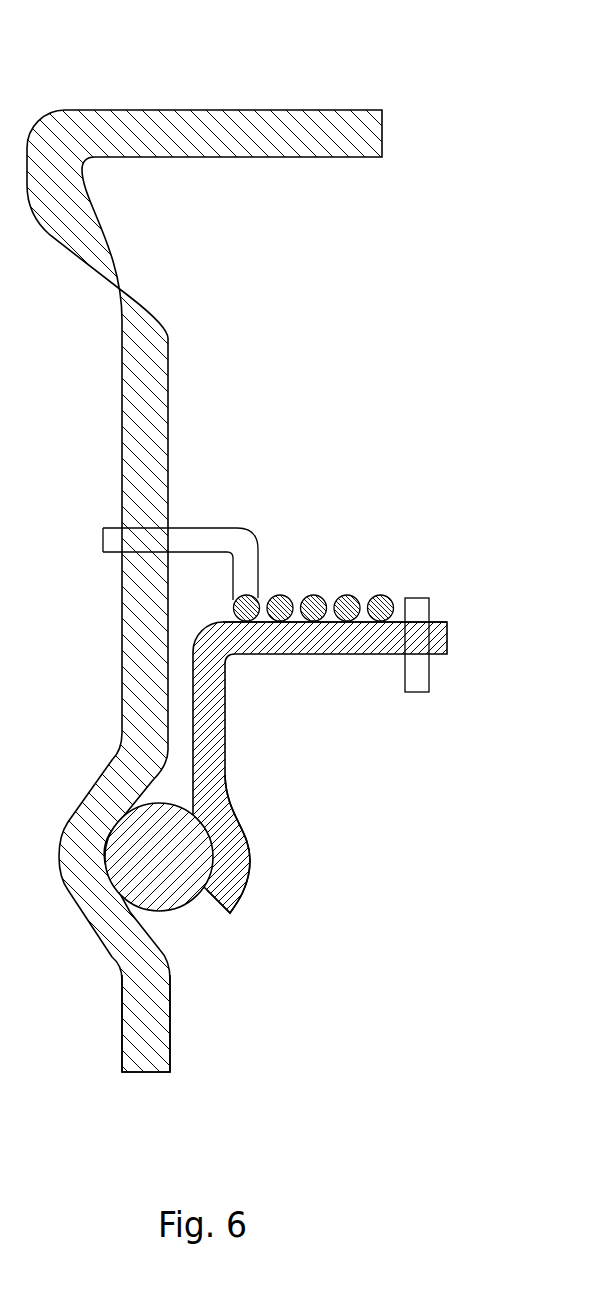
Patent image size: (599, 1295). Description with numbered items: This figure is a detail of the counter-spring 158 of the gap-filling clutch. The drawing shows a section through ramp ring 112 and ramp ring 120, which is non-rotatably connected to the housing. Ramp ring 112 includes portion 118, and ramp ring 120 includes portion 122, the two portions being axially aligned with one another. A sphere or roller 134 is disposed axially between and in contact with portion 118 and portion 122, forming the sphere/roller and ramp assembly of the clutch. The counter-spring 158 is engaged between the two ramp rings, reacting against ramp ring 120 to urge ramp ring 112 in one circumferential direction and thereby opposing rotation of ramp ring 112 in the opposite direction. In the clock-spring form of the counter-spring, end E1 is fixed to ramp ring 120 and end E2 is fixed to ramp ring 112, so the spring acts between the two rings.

The ramp ring 112 is at (348, 110).
The portion 118 is at (183, 1055).
The ramp ring 120 is at (447, 635).
The portion 122 is at (275, 905).
The sphere or roller 134 is at (158, 862).
The counter-spring 158 is at (348, 600).
The end E1 is at (415, 678).
The end E2 is at (110, 542).